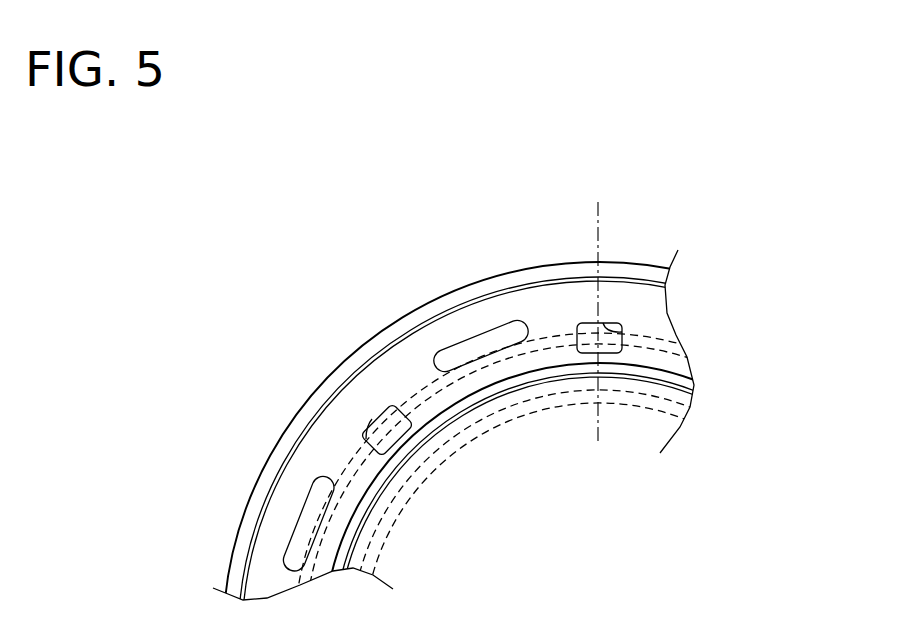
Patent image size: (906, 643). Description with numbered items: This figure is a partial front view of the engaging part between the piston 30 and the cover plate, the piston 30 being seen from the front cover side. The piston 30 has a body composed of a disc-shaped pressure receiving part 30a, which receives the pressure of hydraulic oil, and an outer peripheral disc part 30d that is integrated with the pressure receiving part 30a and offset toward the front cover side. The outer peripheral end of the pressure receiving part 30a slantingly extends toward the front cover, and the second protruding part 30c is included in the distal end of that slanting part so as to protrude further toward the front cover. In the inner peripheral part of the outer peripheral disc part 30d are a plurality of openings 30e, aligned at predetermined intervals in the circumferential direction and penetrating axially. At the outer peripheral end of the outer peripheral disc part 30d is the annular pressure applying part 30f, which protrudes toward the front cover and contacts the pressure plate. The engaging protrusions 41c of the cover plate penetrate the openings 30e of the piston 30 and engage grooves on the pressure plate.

The piston 30 is at (672, 305).
The pressure receiving part 30a is at (660, 430).
The second protruding part 30c is at (690, 372).
The outer peripheral disc part 30d is at (640, 298).
The openings 30e is at (620, 324).
The pressure applying part 30f is at (472, 293).
The engaging protrusions 41c is at (382, 413).